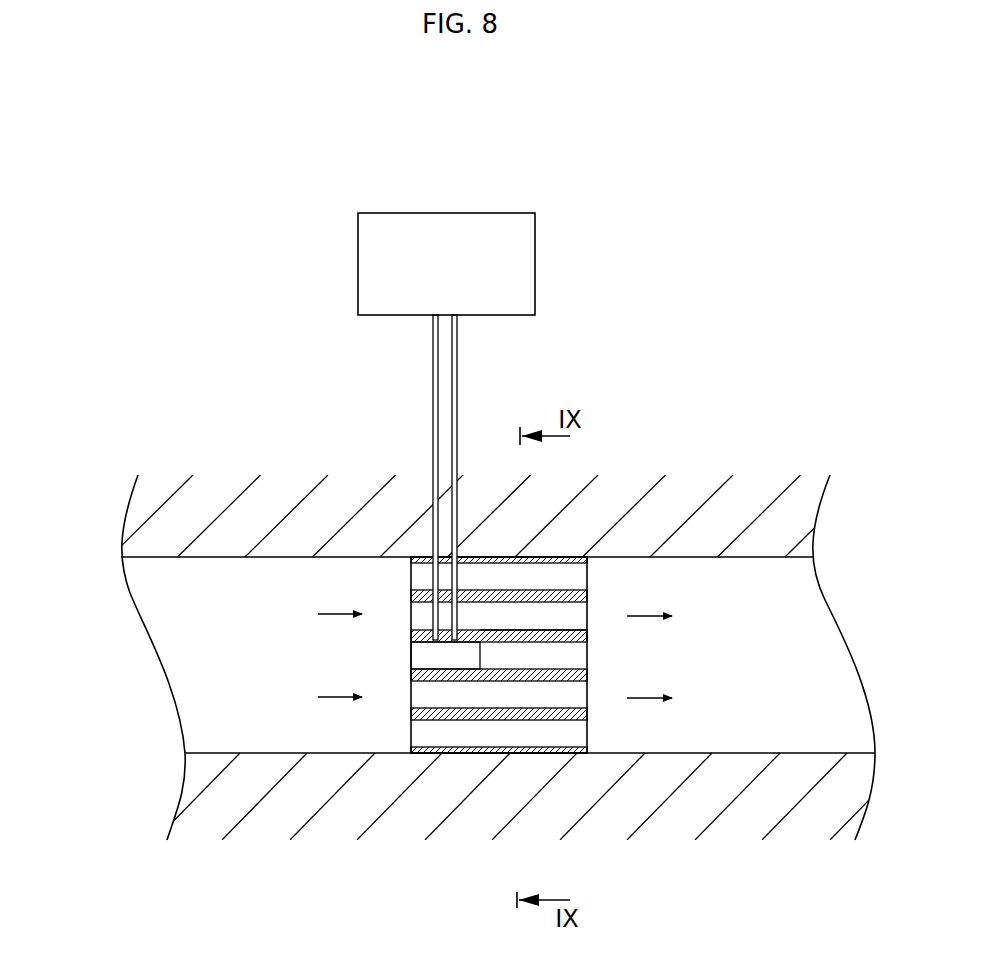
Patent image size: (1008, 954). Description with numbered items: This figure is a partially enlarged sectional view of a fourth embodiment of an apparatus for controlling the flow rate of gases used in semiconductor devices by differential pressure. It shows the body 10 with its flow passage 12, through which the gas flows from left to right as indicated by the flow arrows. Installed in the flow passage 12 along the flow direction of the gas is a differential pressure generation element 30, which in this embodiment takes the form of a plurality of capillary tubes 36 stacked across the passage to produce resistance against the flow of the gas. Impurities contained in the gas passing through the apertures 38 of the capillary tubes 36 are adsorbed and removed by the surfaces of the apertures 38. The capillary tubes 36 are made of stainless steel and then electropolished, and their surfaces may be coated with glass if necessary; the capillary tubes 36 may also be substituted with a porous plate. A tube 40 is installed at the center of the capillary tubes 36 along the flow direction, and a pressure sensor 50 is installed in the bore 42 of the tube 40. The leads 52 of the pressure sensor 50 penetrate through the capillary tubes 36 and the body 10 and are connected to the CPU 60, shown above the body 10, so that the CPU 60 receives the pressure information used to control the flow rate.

The body 10 is at (227, 793).
The flow passage 12 is at (203, 631).
The differential pressure generation element 30 is at (508, 666).
The capillary tubes 36 is at (417, 572).
The apertures 38 is at (541, 748).
The tube 40 is at (523, 635).
The bore 42 is at (573, 660).
The pressure sensor 50 is at (453, 653).
The leads 52 is at (457, 380).
The CPU 60 is at (378, 213).